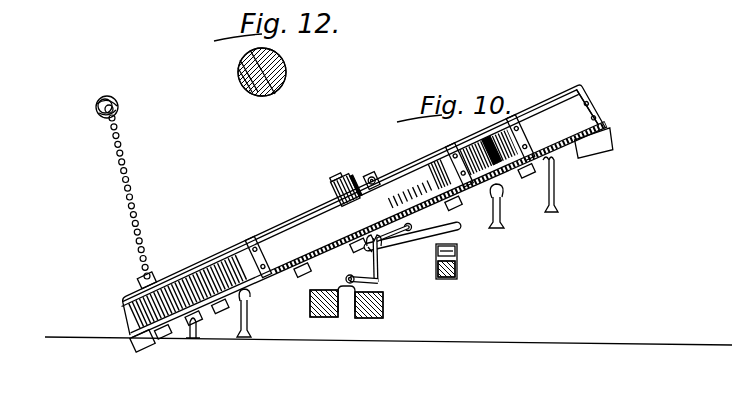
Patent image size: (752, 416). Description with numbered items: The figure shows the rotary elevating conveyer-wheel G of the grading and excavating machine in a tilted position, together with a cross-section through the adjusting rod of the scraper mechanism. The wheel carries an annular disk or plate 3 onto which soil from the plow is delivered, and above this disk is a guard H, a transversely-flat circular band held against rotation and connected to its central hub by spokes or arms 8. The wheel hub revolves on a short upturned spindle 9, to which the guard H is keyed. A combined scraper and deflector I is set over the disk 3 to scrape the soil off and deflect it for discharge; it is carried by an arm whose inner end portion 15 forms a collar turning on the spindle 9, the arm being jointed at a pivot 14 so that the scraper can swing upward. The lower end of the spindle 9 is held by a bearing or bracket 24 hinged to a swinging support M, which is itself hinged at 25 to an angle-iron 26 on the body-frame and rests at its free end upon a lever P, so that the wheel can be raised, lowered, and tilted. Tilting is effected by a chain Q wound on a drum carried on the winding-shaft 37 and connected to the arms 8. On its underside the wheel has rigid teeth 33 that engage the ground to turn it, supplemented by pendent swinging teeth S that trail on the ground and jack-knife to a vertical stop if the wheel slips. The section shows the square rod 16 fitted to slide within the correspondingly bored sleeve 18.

In FIG. 10, the rotary winding-shaft 37 is at (95, 108).
In FIG. 10, the chain Q is at (137, 180).
In FIG. 10, the guard H is at (297, 221).
In FIG. 10, the spokes or arms 8 is at (195, 268).
In FIG. 10, the annular disk or plate 3 is at (563, 152).
In FIG. 10, the combined scraper and deflector I is at (590, 120).
In FIG. 10, the teeth 33 is at (163, 341).
In FIG. 10, the inner end portion of arm 15 is at (330, 190).
In FIG. 10, the upturned spindle or axle 9 is at (338, 178).
In FIG. 10, the pivot 14 is at (371, 175).
In FIG. 10, the pendent swinging teeth S is at (245, 339).
In FIG. 10, the bearing or bracket 24 is at (412, 247).
In FIG. 10, the hinge 25 is at (355, 279).
In FIG. 10, the rotary elevating conveyer-wheel G is at (310, 296).
In FIG. 10, the angle-iron 26 is at (304, 291).
In FIG. 10, the swinging support M is at (426, 256).
In FIG. 10, the lever P is at (458, 262).
In FIG. 12, the rod or shaft 16 is at (241, 83).
In FIG. 12, the sleeve 18 is at (286, 77).